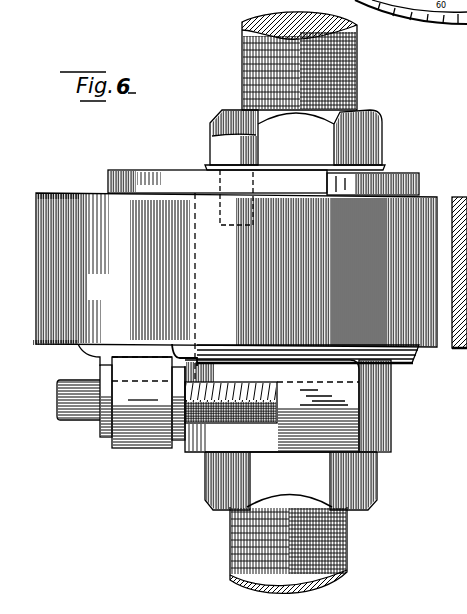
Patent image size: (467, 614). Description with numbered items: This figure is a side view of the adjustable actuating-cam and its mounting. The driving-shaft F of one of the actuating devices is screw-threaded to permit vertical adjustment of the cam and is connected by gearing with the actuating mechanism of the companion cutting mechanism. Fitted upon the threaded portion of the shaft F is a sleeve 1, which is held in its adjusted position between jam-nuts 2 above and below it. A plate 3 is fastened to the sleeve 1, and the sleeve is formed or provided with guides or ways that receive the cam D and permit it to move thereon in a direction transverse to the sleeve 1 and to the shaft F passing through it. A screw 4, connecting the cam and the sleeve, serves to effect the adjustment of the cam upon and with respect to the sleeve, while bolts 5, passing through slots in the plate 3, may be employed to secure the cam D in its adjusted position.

The sleeve 1 is at (384, 432).
The jam-nuts 2 is at (295, 310).
The plate 3 is at (217, 181).
The screw 4 is at (74, 413).
The bolts 5 is at (236, 183).
The driving-shaft F is at (352, 88).
The cam D is at (452, 197).